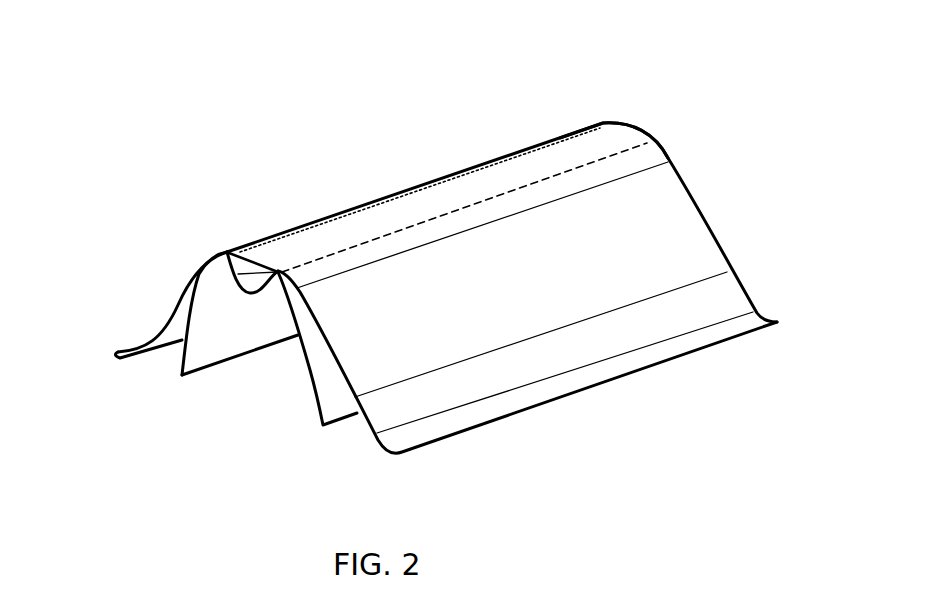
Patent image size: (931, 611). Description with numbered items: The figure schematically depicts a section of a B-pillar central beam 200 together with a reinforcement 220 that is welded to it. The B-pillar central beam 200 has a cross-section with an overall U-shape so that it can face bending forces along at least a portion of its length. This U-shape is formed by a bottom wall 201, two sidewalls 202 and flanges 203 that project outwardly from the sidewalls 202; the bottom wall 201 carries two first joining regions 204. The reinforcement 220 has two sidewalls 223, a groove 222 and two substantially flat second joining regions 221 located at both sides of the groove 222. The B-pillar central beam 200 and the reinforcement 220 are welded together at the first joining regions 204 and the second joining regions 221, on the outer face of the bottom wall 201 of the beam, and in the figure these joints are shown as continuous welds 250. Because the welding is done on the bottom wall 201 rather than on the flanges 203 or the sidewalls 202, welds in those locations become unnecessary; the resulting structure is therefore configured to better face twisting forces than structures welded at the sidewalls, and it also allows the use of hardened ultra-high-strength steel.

The B-pillar central beam 200 is at (636, 88).
The bottom wall 201 is at (637, 123).
The sidewalls 202 is at (692, 257).
The flanges 203 is at (452, 423).
The continuous welds 250 is at (403, 227).
The first joining regions 204 is at (278, 270).
The reinforcement 220 is at (235, 398).
The second joining regions 221 is at (200, 263).
The groove 222 is at (277, 274).
The sidewalls 223 is at (180, 377).